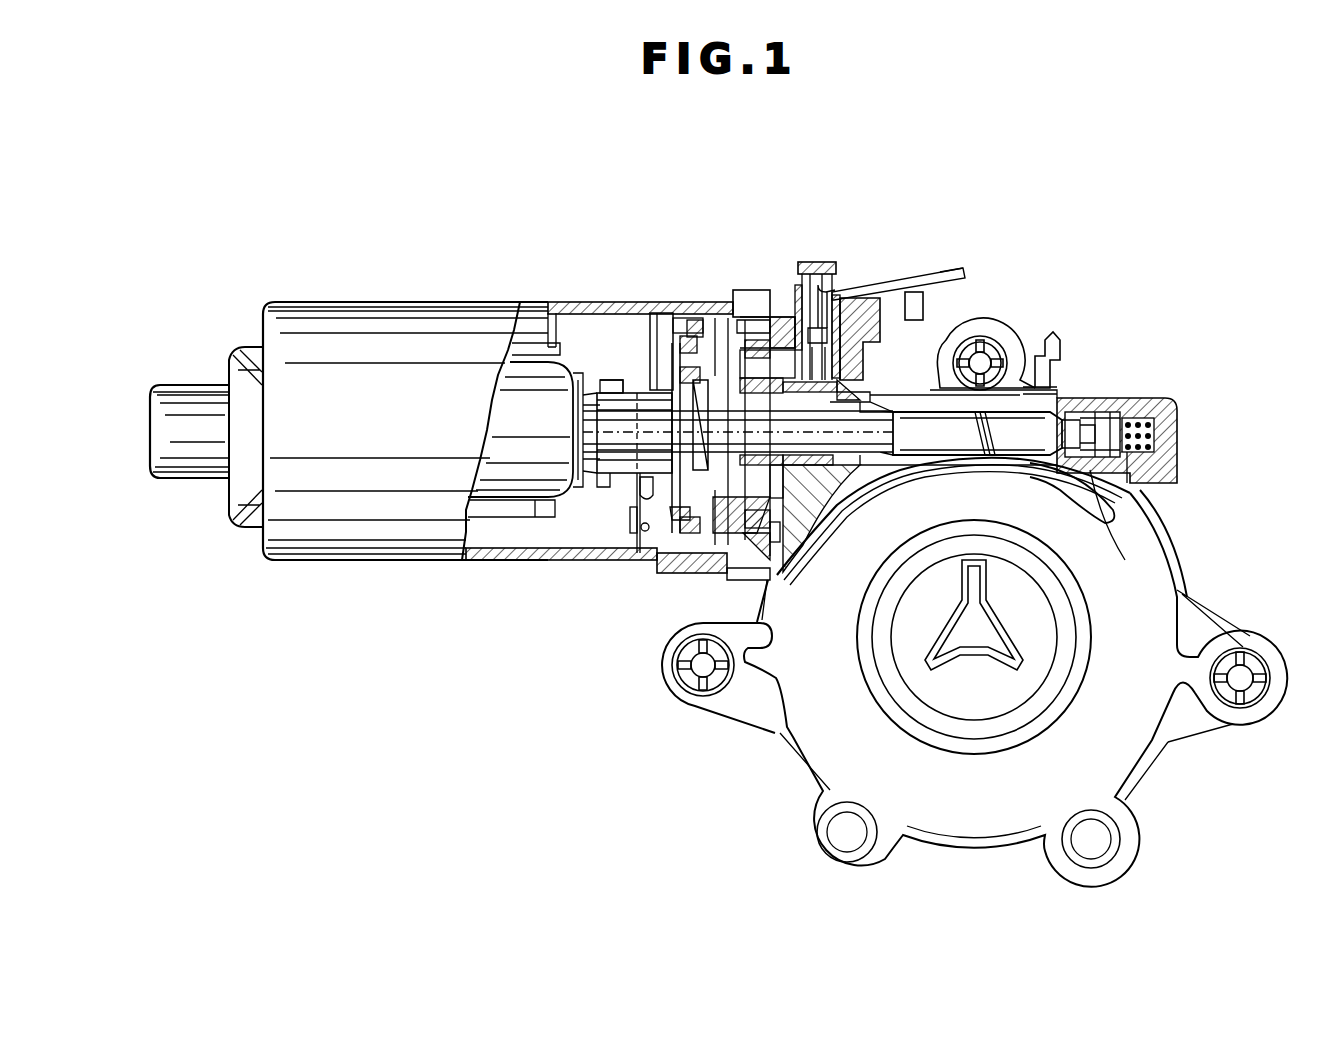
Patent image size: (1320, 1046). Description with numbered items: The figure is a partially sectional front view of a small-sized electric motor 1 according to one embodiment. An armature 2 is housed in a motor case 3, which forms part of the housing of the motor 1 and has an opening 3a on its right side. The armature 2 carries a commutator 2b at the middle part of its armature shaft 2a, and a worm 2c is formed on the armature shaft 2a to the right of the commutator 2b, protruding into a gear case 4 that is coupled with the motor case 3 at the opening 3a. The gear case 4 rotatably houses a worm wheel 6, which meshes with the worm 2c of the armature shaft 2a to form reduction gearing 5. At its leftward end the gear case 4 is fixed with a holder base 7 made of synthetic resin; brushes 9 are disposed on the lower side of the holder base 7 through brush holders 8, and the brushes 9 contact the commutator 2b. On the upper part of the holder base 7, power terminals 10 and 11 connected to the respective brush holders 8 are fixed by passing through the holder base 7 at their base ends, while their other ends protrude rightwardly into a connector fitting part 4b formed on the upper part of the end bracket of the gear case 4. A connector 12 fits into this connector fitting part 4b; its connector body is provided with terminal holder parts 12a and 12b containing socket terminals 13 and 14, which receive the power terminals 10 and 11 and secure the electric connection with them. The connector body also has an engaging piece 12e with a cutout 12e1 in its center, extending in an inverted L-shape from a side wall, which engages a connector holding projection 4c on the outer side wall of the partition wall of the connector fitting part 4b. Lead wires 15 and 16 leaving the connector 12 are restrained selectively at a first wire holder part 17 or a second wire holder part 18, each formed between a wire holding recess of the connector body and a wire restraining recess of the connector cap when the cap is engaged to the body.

The small-sized electric motor 1 is at (648, 252).
The armature 2 is at (552, 357).
The armature shaft 2a is at (603, 475).
The commutator 2b is at (633, 480).
The worm 2c is at (1080, 400).
The motor case 3 is at (339, 303).
The opening 3a is at (642, 302).
The gear case 4 is at (1178, 415).
The connector fitting part 4b is at (883, 373).
The connector holding projection 4c is at (873, 342).
The reduction gearing 5 is at (1133, 467).
The worm wheel 6 is at (1140, 497).
The holder base 7 is at (684, 565).
The brush holders 8 is at (627, 560).
The brushes 9 is at (644, 560).
The power terminal 10 is at (762, 367).
The power terminal 11 is at (770, 322).
The connector 12 is at (813, 258).
The terminal holder part 12a is at (1047, 364).
The terminal holder part 12b is at (1023, 394).
The engaging piece 12e is at (847, 302).
The cutout 12e1 is at (957, 322).
The socket terminal 13 is at (880, 264).
The socket terminal 14 is at (826, 300).
The lead wire 15 is at (992, 228).
The lead wire 16 is at (953, 273).
The first wire holder part 17 is at (840, 302).
The second wire holder part 18 is at (795, 300).